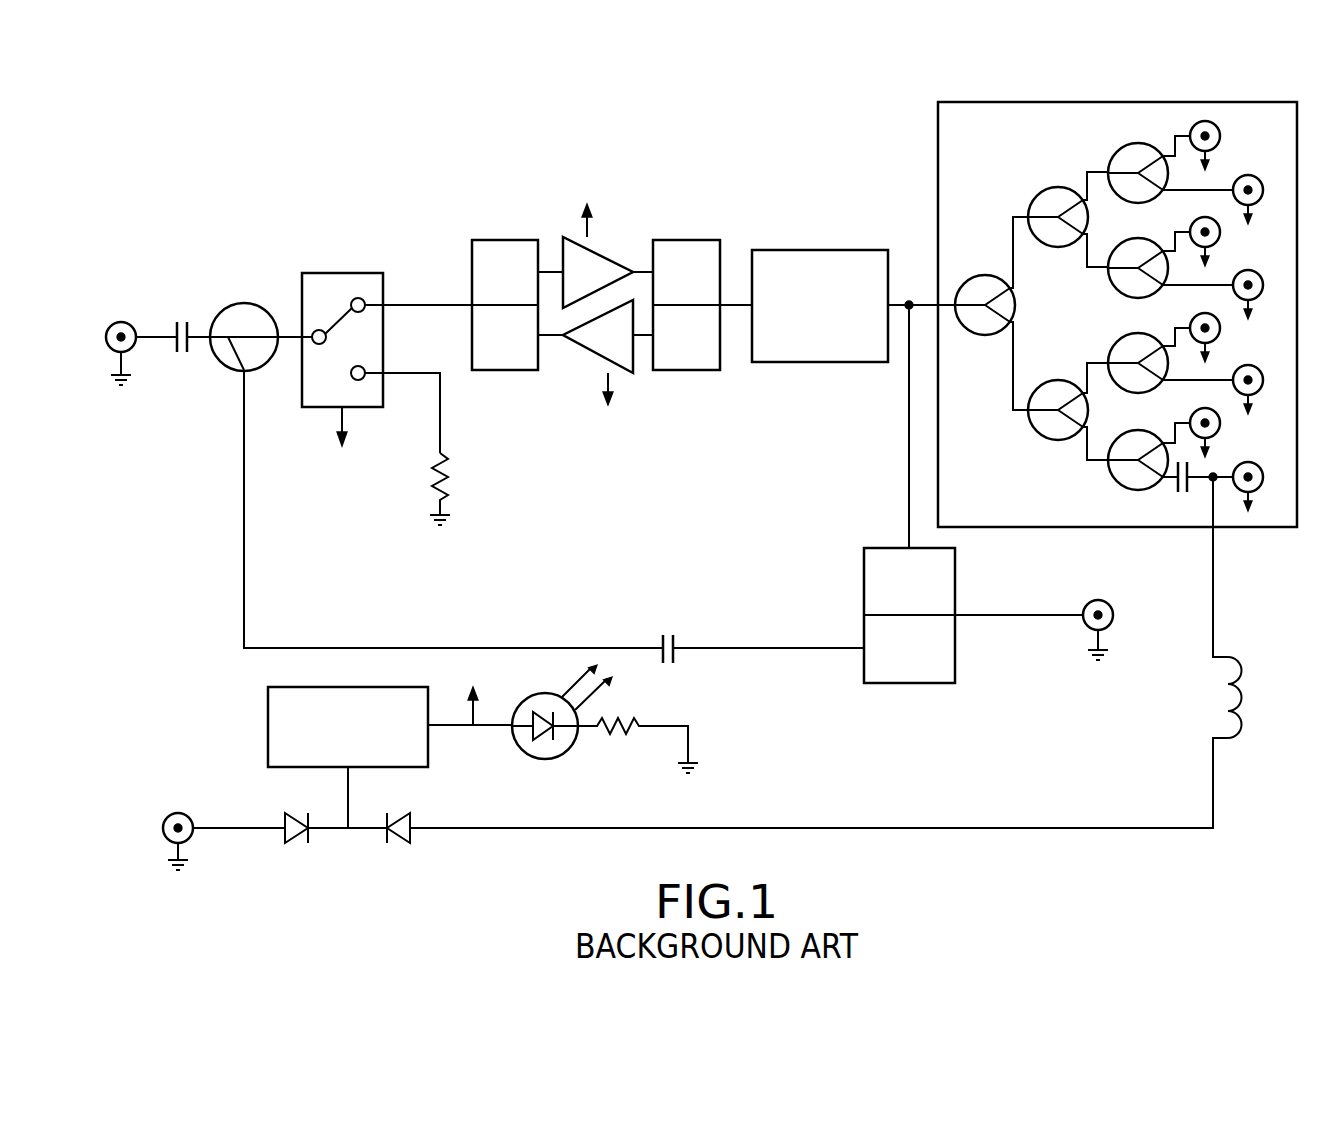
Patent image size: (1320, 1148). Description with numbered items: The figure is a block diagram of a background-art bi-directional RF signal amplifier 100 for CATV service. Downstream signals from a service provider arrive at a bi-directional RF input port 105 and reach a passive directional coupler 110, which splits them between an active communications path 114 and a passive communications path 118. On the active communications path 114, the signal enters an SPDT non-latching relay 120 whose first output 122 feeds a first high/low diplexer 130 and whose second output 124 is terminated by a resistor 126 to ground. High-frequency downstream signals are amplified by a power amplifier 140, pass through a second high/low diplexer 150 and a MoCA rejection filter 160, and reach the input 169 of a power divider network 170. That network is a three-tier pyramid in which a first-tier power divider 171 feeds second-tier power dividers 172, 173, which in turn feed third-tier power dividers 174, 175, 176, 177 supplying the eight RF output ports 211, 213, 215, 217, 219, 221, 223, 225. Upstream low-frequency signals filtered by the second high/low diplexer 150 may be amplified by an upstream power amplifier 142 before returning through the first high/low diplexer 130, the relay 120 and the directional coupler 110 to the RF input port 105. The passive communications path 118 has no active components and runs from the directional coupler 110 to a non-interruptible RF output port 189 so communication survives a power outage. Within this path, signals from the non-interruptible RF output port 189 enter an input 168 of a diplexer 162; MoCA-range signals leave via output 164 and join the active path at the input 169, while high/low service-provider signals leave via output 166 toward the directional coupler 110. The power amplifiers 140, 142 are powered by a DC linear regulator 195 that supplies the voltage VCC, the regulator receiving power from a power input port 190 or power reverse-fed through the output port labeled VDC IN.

The bi-directional RF signal amplifier 100 is at (340, 148).
The bi-directional RF input port 105 is at (132, 341).
The passive directional coupler 110 is at (231, 288).
The active communications path 114 is at (660, 409).
The passive communications path 118 is at (453, 509).
The SPDT non-latching relay 120 is at (330, 342).
The first output of the relay 122 is at (427, 288).
The second output of the relay 124 is at (411, 413).
The resistor 126 is at (457, 489).
The first high/low diplexer 130 is at (503, 273).
The power amplifier 140 is at (595, 242).
The upstream power amplifier 142 is at (595, 366).
The second high/low diplexer 150 is at (686, 273).
The MoCA rejection filter 160 is at (800, 250).
The diplexer 162 is at (909, 648).
The output of the diplexer 164 is at (888, 426).
The output of the diplexer 166 is at (763, 639).
The input of the diplexer 168 is at (1019, 599).
The input of the power divider network 169 is at (922, 302).
The power divider network 170 is at (1120, 309).
The power divider 171 is at (982, 336).
The power divider 172 is at (1033, 199).
The power divider 173 is at (1036, 433).
The power divider 174 is at (1113, 151).
The power divider 175 is at (1113, 287).
The power divider 176 is at (1113, 350).
The power divider 177 is at (1113, 485).
The non-interruptible RF output port 189 is at (1097, 613).
The power input port 190 is at (192, 836).
The DC linear regulator 195 is at (268, 710).
The RF output port 211 is at (1187, 136).
The RF output port 213 is at (1246, 186).
The RF output port 215 is at (1187, 234).
The RF output port 217 is at (1246, 281).
The RF output port 219 is at (1187, 329).
The RF output port 221 is at (1246, 375).
The RF output port 223 is at (1187, 426).
The RF output port 225 is at (1262, 490).